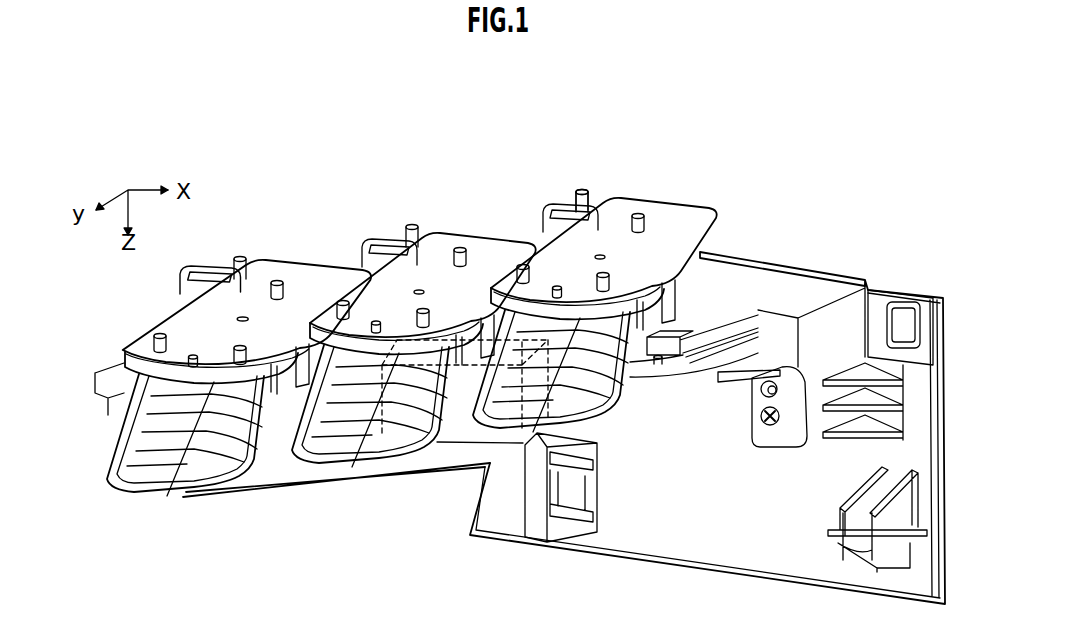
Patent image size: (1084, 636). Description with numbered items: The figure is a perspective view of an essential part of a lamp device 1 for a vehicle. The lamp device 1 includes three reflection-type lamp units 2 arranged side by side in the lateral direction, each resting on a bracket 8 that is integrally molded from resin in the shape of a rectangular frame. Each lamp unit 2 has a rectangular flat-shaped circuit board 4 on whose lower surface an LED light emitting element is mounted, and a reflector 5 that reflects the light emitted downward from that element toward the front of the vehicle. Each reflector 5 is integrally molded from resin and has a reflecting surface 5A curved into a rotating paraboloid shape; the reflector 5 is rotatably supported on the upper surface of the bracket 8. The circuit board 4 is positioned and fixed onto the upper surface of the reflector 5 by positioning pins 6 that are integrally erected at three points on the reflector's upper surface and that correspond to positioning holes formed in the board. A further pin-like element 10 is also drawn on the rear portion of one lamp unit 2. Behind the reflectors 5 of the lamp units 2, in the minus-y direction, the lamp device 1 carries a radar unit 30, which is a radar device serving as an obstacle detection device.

The lamp device 1 is at (547, 152).
The lamp unit 2 is at (272, 256).
The circuit board 4 is at (190, 332).
The reflector 5 is at (128, 493).
The reflecting surface 5A is at (150, 443).
The positioning pin 6 is at (644, 212).
The bracket 8 is at (828, 266).
The positioning pin 10 is at (583, 188).
The radar unit 30 is at (467, 443).